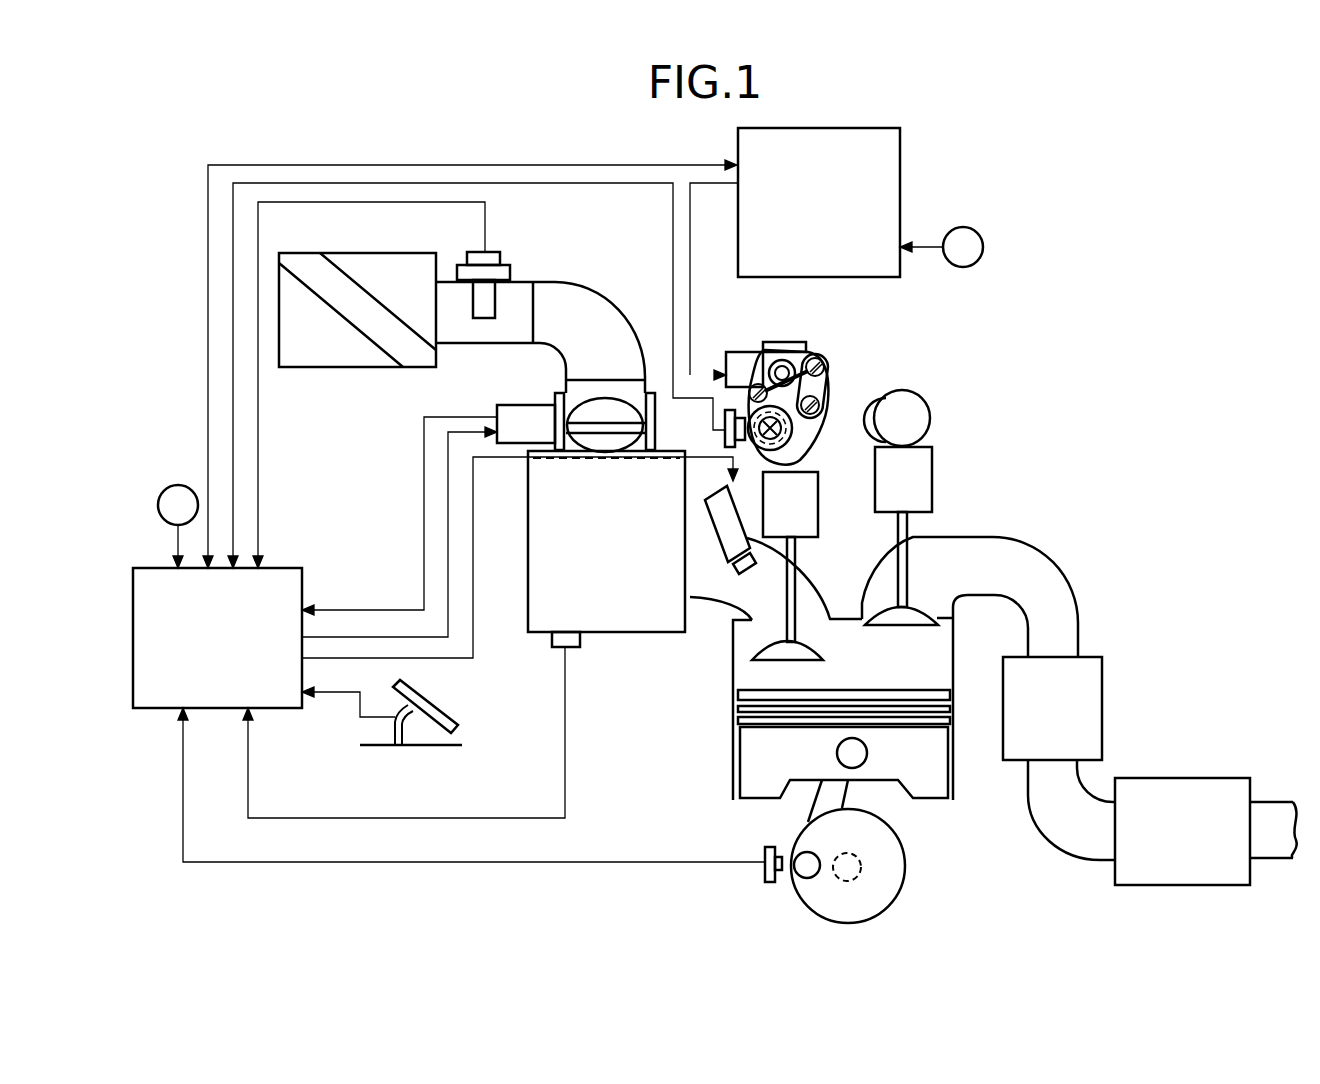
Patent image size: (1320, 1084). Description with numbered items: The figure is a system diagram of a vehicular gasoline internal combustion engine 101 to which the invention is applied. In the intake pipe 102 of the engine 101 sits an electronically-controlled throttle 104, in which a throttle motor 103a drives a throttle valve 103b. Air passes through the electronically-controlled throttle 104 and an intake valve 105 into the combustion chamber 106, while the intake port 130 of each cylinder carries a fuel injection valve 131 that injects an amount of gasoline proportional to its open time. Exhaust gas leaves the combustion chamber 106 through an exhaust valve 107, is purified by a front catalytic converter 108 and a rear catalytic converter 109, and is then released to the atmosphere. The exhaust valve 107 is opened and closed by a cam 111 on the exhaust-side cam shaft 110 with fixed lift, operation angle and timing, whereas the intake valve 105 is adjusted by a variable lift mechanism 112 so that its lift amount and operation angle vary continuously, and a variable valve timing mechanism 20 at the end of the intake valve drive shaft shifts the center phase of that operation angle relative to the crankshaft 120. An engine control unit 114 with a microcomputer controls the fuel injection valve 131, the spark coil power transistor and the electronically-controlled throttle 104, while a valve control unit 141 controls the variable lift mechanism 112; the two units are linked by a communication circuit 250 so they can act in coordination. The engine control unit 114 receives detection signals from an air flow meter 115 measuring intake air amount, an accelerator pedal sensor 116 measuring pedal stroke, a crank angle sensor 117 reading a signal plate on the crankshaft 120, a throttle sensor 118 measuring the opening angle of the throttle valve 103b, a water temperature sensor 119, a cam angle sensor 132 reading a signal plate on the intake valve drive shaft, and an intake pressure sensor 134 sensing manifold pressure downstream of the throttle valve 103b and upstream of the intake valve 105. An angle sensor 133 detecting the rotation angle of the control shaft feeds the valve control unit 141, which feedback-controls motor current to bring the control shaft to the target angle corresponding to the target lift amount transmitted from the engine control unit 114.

The variable valve timing mechanism 20 is at (797, 443).
The engine 101 is at (723, 750).
The intake pipe 102 is at (580, 292).
The throttle motor 103a is at (518, 417).
The throttle valve 103b is at (582, 413).
The electronically-controlled throttle 104 is at (428, 398).
The intake valve 105 is at (793, 597).
The combustion chamber 106 is at (947, 647).
The exhaust valve 107 is at (913, 520).
The front catalytic converter 108 is at (1103, 663).
The rear catalytic converter 109 is at (1202, 778).
The exhaust-side cam shaft 110 is at (908, 405).
The cam 111 is at (873, 400).
The variable lift mechanism 112 is at (832, 333).
The engine control unit 114 is at (158, 712).
The air flow meter 115 is at (497, 266).
The accelerator pedal sensor 116 is at (383, 747).
The crank angle sensor 117 is at (765, 877).
The throttle sensor 118 is at (650, 393).
The water temperature sensor 119 is at (182, 486).
The crankshaft 120 is at (861, 852).
The intake port 130 is at (720, 590).
The fuel injection valve 131 is at (720, 513).
The cam angle sensor 132 is at (722, 442).
The angle sensor 133 is at (980, 233).
The intake pressure sensor 134 is at (550, 644).
The valve control unit 141 is at (902, 187).
The communication circuit 250 is at (508, 164).